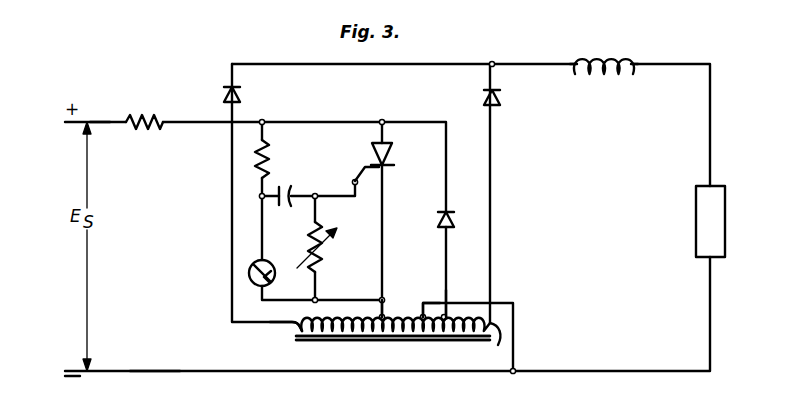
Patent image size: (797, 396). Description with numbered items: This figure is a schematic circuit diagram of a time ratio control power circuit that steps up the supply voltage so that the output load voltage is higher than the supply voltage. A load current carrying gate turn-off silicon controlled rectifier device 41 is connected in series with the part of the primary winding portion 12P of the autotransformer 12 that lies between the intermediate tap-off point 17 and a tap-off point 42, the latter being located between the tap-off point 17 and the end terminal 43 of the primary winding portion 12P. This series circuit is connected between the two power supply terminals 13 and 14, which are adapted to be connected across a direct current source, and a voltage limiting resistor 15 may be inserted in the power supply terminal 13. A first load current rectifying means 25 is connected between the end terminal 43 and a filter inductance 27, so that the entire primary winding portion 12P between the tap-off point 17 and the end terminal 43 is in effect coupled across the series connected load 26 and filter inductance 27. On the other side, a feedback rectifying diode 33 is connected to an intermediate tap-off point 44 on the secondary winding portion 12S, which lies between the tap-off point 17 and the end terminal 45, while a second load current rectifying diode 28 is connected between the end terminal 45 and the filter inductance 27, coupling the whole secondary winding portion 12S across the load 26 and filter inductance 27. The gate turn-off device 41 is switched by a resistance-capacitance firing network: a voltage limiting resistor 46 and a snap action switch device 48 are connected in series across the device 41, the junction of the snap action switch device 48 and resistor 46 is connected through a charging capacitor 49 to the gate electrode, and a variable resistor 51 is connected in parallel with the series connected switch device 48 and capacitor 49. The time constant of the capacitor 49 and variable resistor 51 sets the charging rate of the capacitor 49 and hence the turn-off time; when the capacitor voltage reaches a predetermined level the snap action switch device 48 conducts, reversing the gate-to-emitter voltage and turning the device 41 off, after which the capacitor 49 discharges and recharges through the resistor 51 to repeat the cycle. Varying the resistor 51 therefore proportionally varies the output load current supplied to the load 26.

The autotransformer 12 is at (401, 364).
The primary winding portion 12P is at (340, 337).
The secondary winding portion 12S is at (458, 337).
The power supply terminal 13 is at (100, 118).
The power supply terminal 14 is at (150, 370).
The voltage limiting resistor 15 is at (143, 116).
The intermediate tap-off point 17 is at (422, 308).
The first load current rectifying means 25 is at (241, 96).
The load 26 is at (696, 222).
The filter inductance 27 is at (601, 58).
The second load current rectifying diode 28 is at (502, 98).
The feedback rectifying diode 33 is at (452, 223).
The gate turn-off silicon controlled rectifier device 41 is at (394, 153).
The tap-off point 42 is at (384, 314).
The end terminal 43 is at (290, 328).
The intermediate tap-off point 44 is at (446, 312).
The end terminal 45 is at (496, 346).
The voltage limiting resistor 46 is at (274, 151).
The snap action switch device 48 is at (276, 275).
The charging capacitor 49 is at (290, 192).
The variable resistor 51 is at (325, 252).